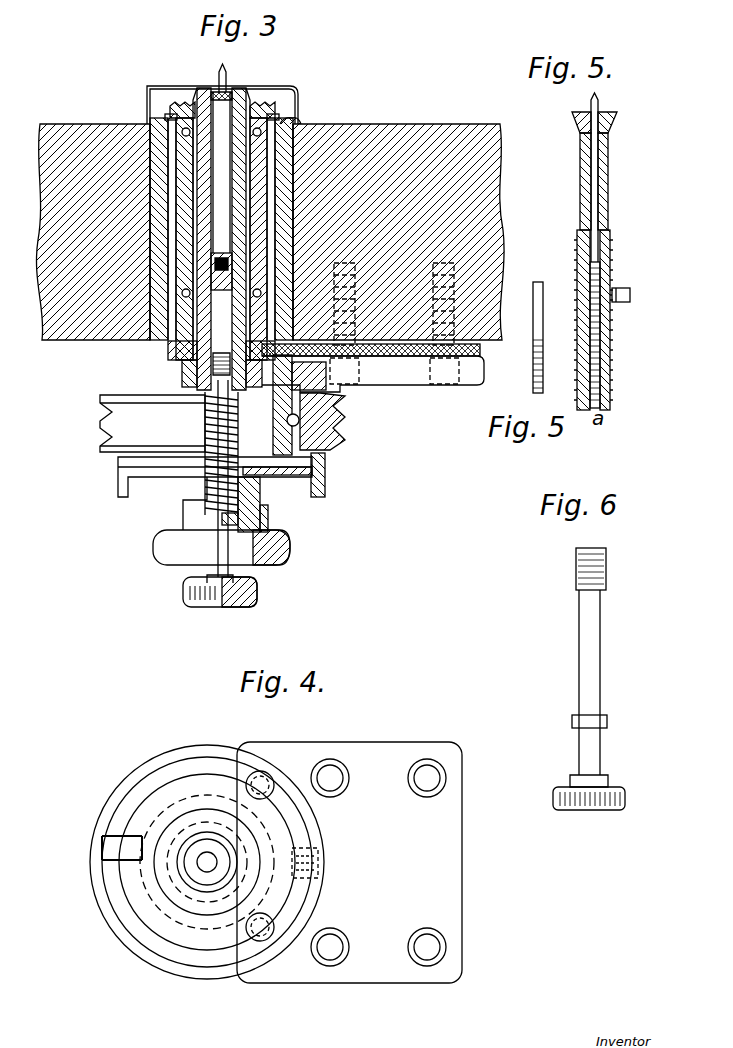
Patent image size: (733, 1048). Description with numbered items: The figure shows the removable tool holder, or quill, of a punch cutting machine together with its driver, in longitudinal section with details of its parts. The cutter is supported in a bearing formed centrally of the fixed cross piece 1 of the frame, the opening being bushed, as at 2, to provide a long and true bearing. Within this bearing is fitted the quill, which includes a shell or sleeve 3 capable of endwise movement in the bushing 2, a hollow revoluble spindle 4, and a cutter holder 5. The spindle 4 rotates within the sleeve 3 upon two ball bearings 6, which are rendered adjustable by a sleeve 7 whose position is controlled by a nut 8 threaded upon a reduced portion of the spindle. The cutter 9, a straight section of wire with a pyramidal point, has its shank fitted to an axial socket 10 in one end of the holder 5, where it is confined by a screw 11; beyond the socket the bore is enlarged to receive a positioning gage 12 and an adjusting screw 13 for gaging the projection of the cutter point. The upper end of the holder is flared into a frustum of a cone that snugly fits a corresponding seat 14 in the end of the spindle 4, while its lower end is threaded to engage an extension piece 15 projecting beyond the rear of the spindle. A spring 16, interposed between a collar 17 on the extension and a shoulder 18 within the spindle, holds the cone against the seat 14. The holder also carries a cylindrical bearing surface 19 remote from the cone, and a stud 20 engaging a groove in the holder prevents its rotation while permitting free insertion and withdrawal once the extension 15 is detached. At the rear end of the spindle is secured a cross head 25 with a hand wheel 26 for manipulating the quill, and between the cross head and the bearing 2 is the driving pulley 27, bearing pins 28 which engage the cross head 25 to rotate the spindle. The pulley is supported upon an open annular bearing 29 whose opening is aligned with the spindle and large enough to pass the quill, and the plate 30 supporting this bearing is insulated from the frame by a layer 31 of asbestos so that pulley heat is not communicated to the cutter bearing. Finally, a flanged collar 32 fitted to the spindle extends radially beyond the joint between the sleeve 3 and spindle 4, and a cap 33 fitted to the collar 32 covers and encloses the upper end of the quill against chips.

In FIG. 3, the fixed cross piece 1 is at (368, 134).
In FIG. 3, the bushing 2 is at (296, 140).
In FIG. 3, the shell or sleeve 3 is at (300, 116).
In FIG. 3, the hollow revoluble spindle 4 is at (240, 96).
In FIG. 3, the cutter holder 5 is at (206, 96).
In FIG. 5, the cutter holder 5 is at (611, 235).
In FIG. 3, the ball bearings 6 is at (280, 118).
In FIG. 3, the sleeve 7 is at (180, 352).
In FIG. 3, the nut 8 is at (184, 372).
In FIG. 3, the cutter 9 is at (228, 72).
In FIG. 5, the cutter 9 is at (600, 104).
In FIG. 3, the axial opening or socket 10 is at (221, 239).
In FIG. 5, the axial opening or socket 10 is at (582, 150).
In FIG. 5, the screw 11 is at (610, 122).
In FIG. 5, the positioning gage 12 is at (590, 236).
In FIG. 5A, the positioning gage 12 is at (543, 310).
In FIG. 5, the adjusting screw 13 is at (606, 316).
In FIG. 5A, the adjusting screw 13 is at (544, 352).
In FIG. 3, the seat 14 is at (176, 108).
In FIG. 3, the extension piece 15 is at (236, 583).
In FIG. 4, the extension piece 15 is at (205, 864).
In FIG. 6, the extension piece 15 is at (579, 600).
In FIG. 3, the spring 16 is at (203, 457).
In FIG. 3, the collar 17 is at (222, 520).
In FIG. 6, the collar 17 is at (608, 722).
In FIG. 3, the shoulder 18 is at (205, 394).
In FIG. 3, the cylindrical bearing surface 19 is at (221, 172).
In FIG. 5, the cylindrical bearing surface 19 is at (577, 250).
In FIG. 3, the stud 20 is at (222, 256).
In FIG. 3, the cross head 25 is at (283, 470).
In FIG. 4, the cross head 25 is at (303, 878).
In FIG. 3, the hand wheel 26 is at (291, 548).
In FIG. 4, the hand wheel 26 is at (272, 832).
In FIG. 3, the driving pulley 27 is at (346, 422).
In FIG. 4, the driving pulley 27 is at (175, 746).
In FIG. 3, the pins 28 is at (326, 478).
In FIG. 4, the pins 28 is at (105, 870).
In FIG. 3, the annular bearing 29 is at (286, 422).
In FIG. 3, the plate 30 is at (392, 387).
In FIG. 4, the plate 30 is at (440, 882).
In FIG. 3, the layer of asbestos 31 is at (418, 386).
In FIG. 3, the flanged collar 32 is at (170, 118).
In FIG. 3, the cap 33 is at (168, 86).